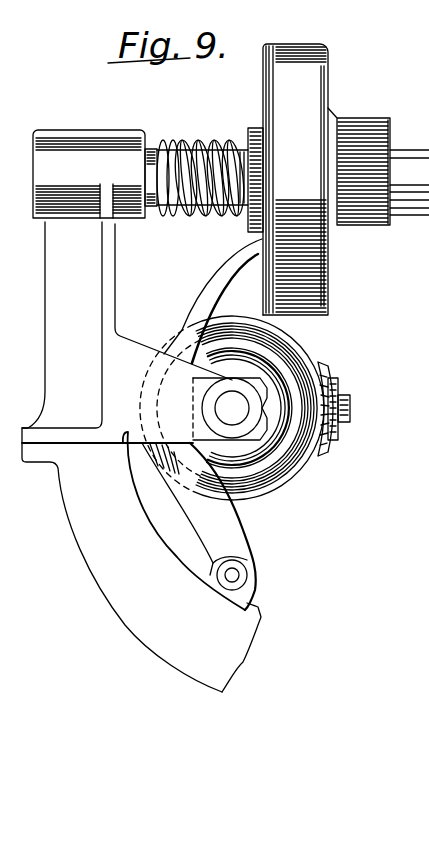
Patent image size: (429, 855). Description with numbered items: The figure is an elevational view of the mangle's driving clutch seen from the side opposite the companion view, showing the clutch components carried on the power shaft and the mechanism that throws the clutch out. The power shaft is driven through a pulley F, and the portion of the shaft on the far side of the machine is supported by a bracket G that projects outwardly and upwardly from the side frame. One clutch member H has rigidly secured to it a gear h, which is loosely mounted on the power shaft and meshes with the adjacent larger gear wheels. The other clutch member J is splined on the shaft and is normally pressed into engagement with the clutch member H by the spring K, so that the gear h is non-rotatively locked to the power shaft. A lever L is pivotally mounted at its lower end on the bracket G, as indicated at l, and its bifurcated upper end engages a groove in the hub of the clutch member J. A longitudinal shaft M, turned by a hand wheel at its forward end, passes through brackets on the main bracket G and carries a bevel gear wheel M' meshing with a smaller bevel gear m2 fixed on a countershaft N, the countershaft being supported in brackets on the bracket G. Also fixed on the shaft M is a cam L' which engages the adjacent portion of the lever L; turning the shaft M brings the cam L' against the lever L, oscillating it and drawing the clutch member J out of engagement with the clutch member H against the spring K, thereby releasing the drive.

The clutch member H is at (330, 52).
The gear h is at (373, 118).
The clutch member J is at (264, 70).
The spring K is at (198, 152).
The pulley F is at (208, 216).
The lever L is at (204, 301).
The shaft M is at (252, 409).
The bevel gear wheel M' is at (332, 390).
The bevel gear m2 is at (334, 376).
The countershaft N is at (351, 411).
The cam L' is at (246, 526).
The pivot l is at (240, 577).
The bracket G is at (141, 411).